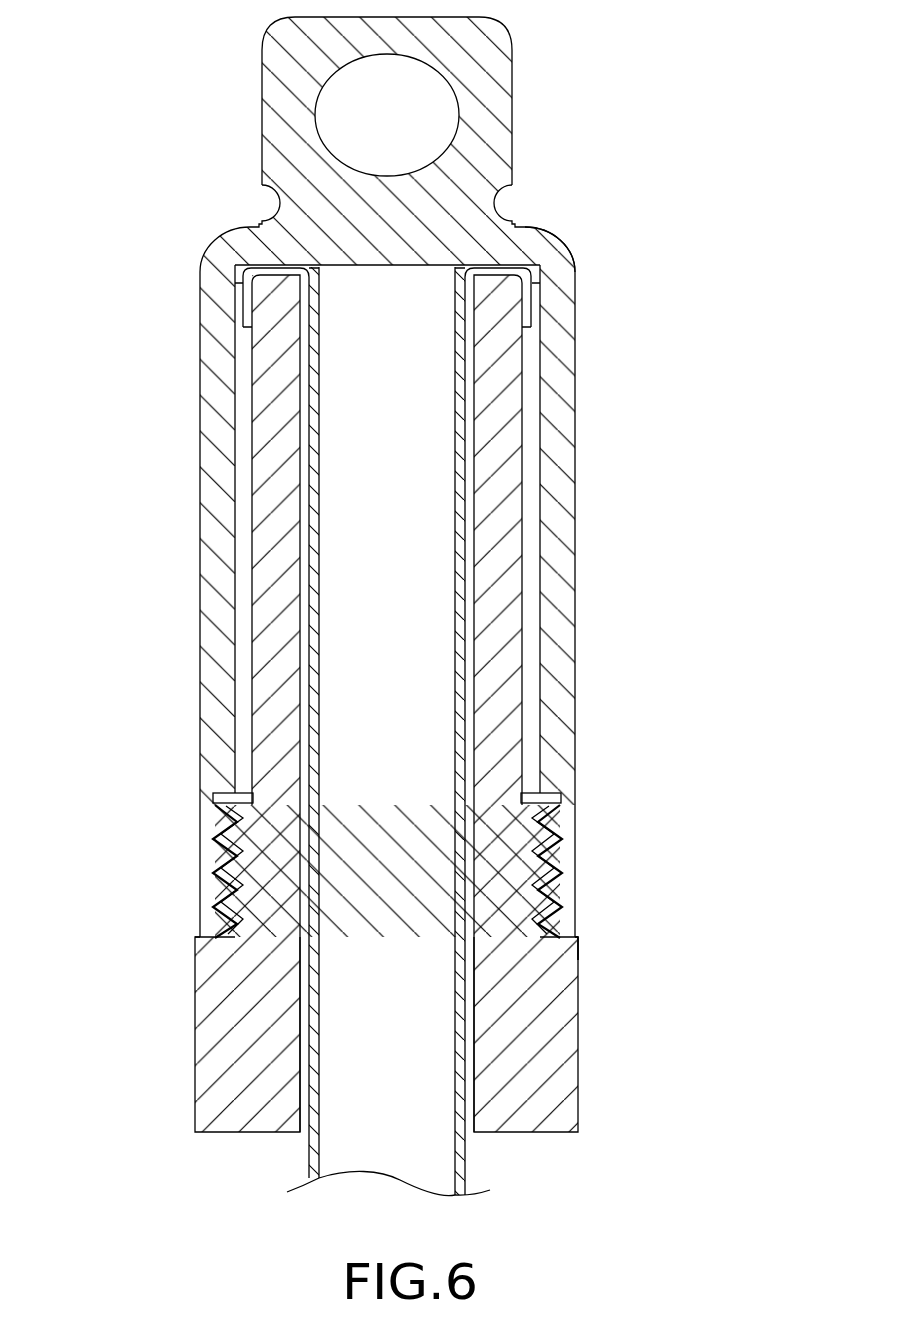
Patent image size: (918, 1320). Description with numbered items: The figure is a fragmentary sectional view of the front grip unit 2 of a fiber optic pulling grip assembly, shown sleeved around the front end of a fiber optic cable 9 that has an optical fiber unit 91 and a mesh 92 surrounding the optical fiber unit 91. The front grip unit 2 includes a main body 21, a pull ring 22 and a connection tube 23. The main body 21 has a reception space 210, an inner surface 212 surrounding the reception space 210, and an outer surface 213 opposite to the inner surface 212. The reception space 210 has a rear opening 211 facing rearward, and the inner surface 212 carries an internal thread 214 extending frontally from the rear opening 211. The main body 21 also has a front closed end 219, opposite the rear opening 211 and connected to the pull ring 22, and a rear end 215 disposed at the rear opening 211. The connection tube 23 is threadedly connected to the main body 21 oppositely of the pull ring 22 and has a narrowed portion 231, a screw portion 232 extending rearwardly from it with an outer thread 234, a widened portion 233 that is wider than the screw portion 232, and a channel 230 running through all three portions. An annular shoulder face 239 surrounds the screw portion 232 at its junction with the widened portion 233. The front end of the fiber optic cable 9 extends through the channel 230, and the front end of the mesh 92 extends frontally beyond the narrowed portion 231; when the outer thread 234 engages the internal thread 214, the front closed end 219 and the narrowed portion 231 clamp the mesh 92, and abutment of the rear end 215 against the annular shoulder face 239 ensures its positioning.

The front grip unit 2 is at (172, 437).
The main body 21 is at (592, 530).
The pull ring 22 is at (500, 108).
The connection tube 23 is at (570, 1043).
The reception space 210 is at (240, 367).
The rear opening 211 is at (558, 948).
The inner surface 212 is at (517, 482).
The outer surface 213 is at (578, 290).
The internal thread 214 is at (545, 830).
The rear end 215 is at (576, 948).
The front closed end 219 is at (461, 272).
The channel 230 is at (305, 546).
The narrowed portion 231 is at (262, 668).
The screw portion 232 is at (232, 884).
The widened portion 233 is at (205, 1005).
The outer thread 234 is at (230, 820).
The annular shoulder face 239 is at (570, 917).
The fiber optic cable 9 is at (485, 1168).
The optical fiber unit 91 is at (440, 1096).
The mesh 92 is at (318, 1082).